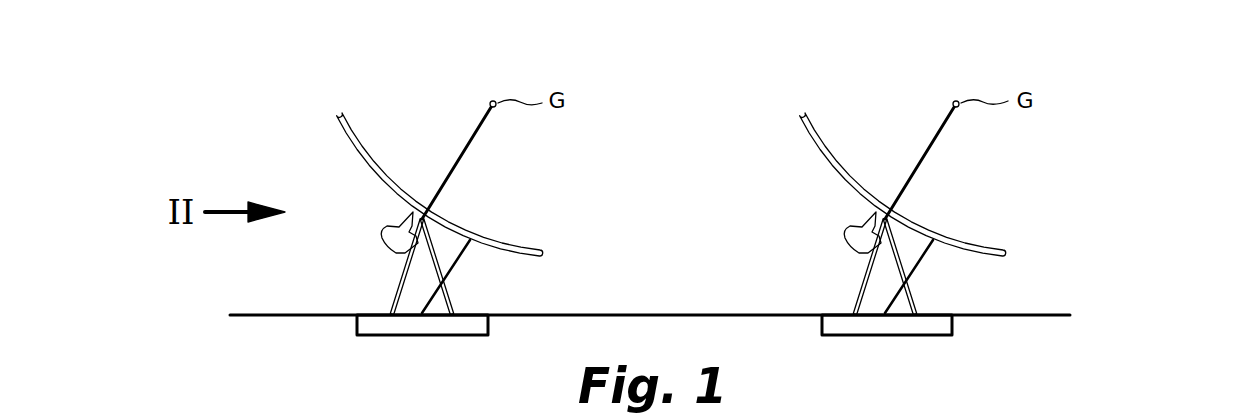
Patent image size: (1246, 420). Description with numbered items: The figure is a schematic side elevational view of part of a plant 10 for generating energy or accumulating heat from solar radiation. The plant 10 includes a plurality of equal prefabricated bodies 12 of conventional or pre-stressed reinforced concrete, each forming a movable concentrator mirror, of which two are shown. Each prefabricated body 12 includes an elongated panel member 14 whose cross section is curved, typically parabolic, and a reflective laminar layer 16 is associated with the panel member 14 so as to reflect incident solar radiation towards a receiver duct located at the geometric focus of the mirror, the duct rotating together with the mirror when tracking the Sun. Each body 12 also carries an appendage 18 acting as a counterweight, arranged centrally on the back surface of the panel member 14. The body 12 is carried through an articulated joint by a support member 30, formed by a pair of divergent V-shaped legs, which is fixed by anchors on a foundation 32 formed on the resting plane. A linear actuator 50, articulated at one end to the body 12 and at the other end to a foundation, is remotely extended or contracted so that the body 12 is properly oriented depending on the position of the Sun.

The plant 10 is at (1112, 127).
The prefabricated body 12 is at (581, 128).
The panel member 14 is at (368, 159).
The reflective laminar layer 16 is at (452, 213).
The appendage 18 is at (382, 228).
The support member 30 is at (398, 288).
The foundation 32 is at (362, 322).
The linear actuator 50 is at (452, 268).